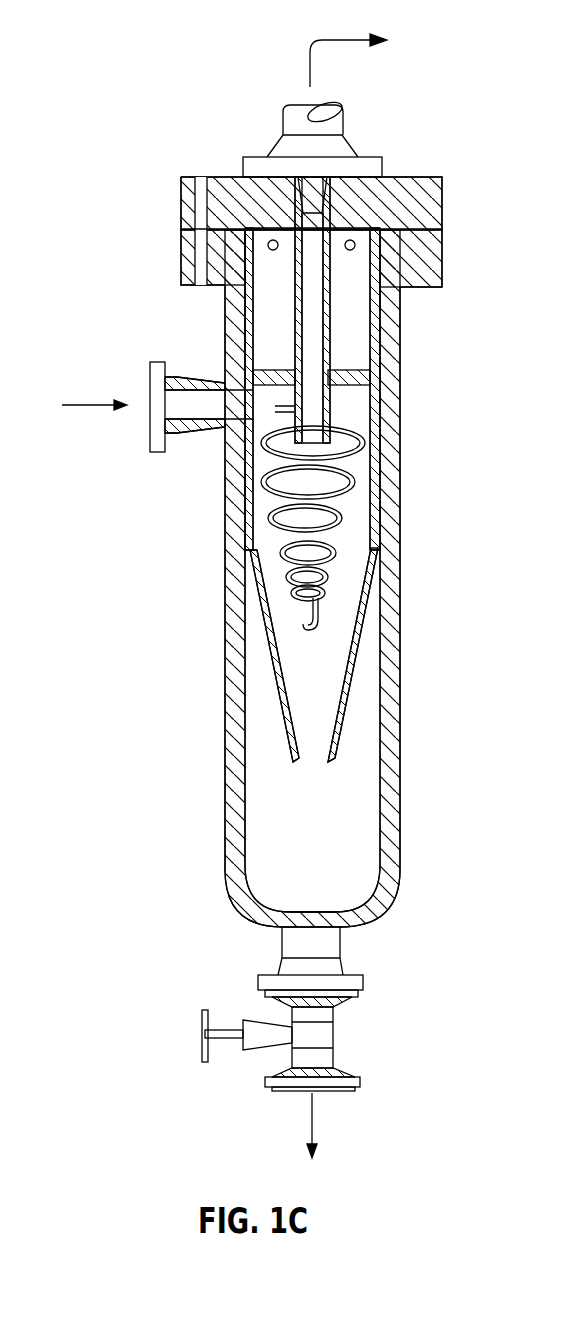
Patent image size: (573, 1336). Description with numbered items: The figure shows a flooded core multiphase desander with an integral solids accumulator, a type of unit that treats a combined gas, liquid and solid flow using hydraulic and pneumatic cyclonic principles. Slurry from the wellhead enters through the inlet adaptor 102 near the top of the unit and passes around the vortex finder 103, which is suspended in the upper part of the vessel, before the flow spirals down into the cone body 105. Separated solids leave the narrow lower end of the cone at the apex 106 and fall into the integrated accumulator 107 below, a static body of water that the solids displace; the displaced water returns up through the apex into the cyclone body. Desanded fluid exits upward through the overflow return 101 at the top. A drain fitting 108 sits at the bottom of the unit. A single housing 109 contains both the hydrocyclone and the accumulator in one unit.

The overflow return 101 is at (295, 100).
The inlet adaptor 102 is at (148, 412).
The vortex finder 103 is at (345, 415).
The cone body 105 is at (353, 578).
The apex 106 is at (330, 758).
The integrated accumulator 107 is at (313, 892).
The drain valve 108 is at (198, 1086).
The housing 109 is at (227, 795).